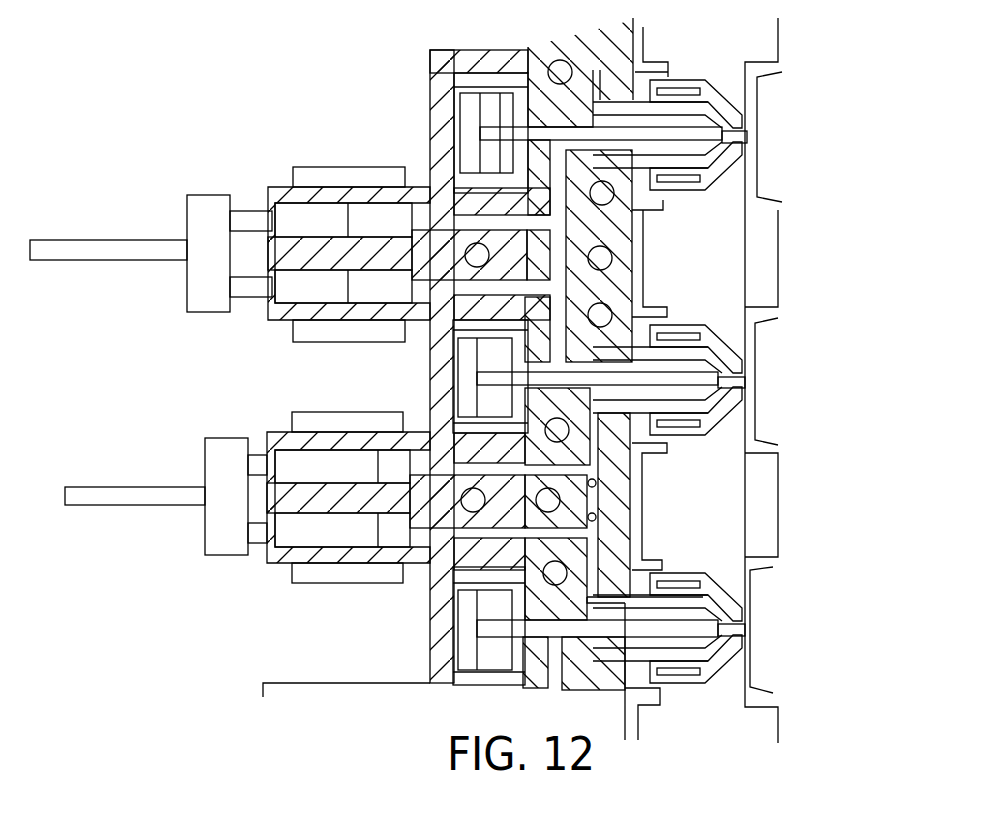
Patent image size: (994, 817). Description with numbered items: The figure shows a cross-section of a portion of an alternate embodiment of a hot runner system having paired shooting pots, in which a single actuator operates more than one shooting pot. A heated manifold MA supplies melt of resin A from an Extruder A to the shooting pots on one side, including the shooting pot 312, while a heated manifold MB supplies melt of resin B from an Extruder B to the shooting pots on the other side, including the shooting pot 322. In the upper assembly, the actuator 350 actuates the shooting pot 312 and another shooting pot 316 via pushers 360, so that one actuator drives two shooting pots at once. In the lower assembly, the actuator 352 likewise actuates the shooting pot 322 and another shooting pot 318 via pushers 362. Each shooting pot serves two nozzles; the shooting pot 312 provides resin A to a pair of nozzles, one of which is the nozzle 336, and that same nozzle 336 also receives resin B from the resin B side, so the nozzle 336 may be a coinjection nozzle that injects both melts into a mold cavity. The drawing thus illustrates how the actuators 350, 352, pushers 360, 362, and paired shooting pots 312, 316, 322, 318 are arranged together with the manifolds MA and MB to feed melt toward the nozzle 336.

The actuator 350 is at (203, 220).
The actuator 352 is at (202, 468).
The pushers 360 is at (255, 218).
The pushers 362 is at (257, 465).
The shooting pot 316 is at (282, 191).
The shooting pot 312 is at (282, 314).
The shooting pot 322 is at (281, 435).
The shooting pot 318 is at (281, 564).
The nozzle 336 is at (735, 381).
The heated manifold MA is at (600, 258).
The heated manifold MB is at (548, 500).